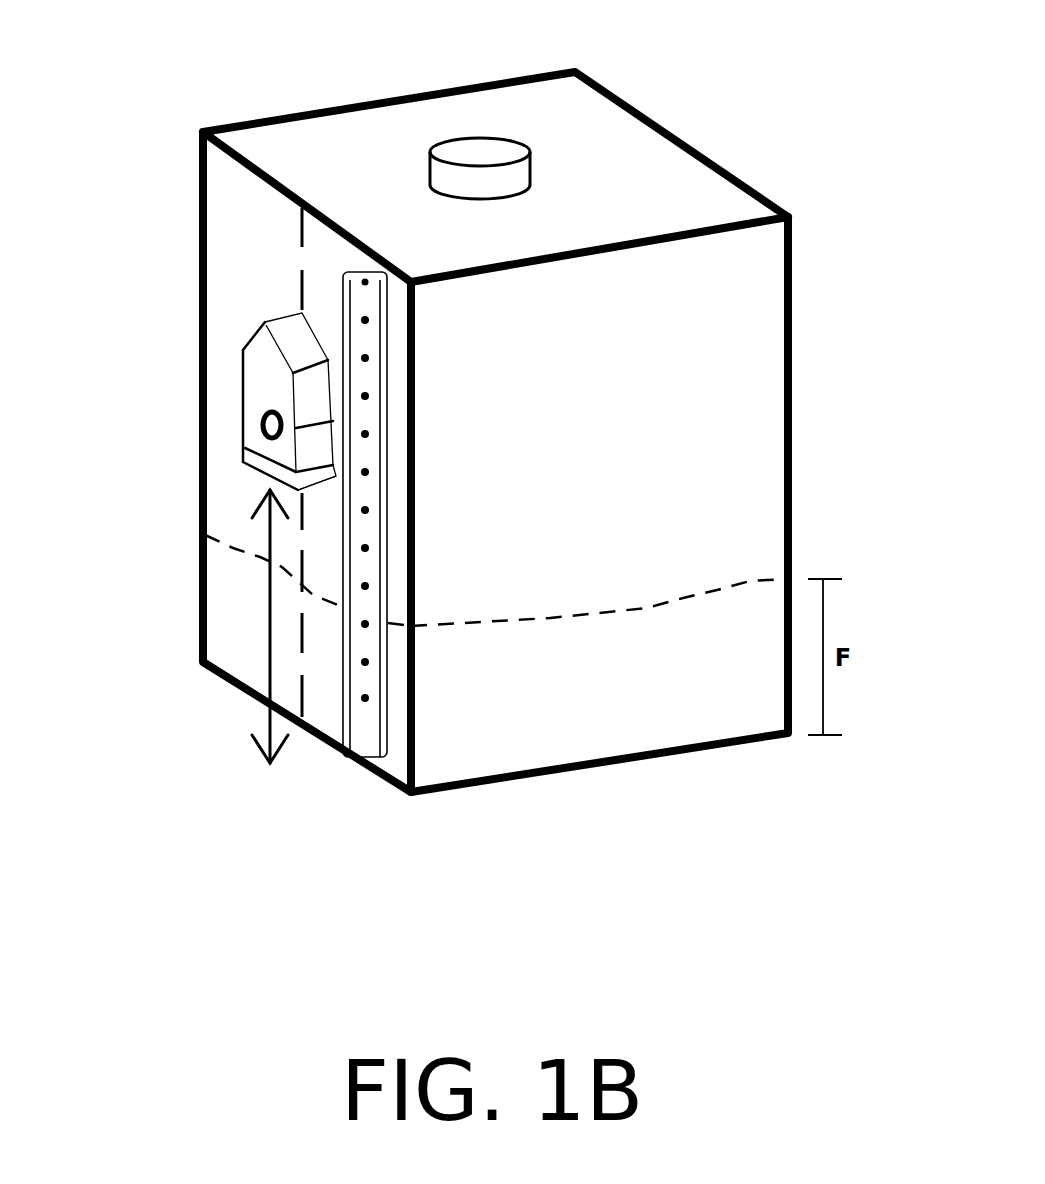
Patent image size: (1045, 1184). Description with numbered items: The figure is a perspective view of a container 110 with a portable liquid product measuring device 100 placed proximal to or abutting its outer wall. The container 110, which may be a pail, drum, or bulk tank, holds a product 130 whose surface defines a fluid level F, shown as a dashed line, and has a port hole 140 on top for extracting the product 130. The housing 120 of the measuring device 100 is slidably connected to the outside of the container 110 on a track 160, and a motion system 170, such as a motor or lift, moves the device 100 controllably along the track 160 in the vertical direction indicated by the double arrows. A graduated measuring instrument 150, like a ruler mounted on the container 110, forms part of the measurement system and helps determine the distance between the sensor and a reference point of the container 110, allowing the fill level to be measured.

The portable liquid product measuring device 100 is at (473, 518).
The container 110 is at (790, 215).
The housing 120 is at (247, 413).
The product 130 is at (683, 598).
The port hole 140 is at (478, 152).
The graduated measuring instrument 150 is at (370, 735).
The track 160 is at (300, 228).
The motion system 170 is at (333, 472).